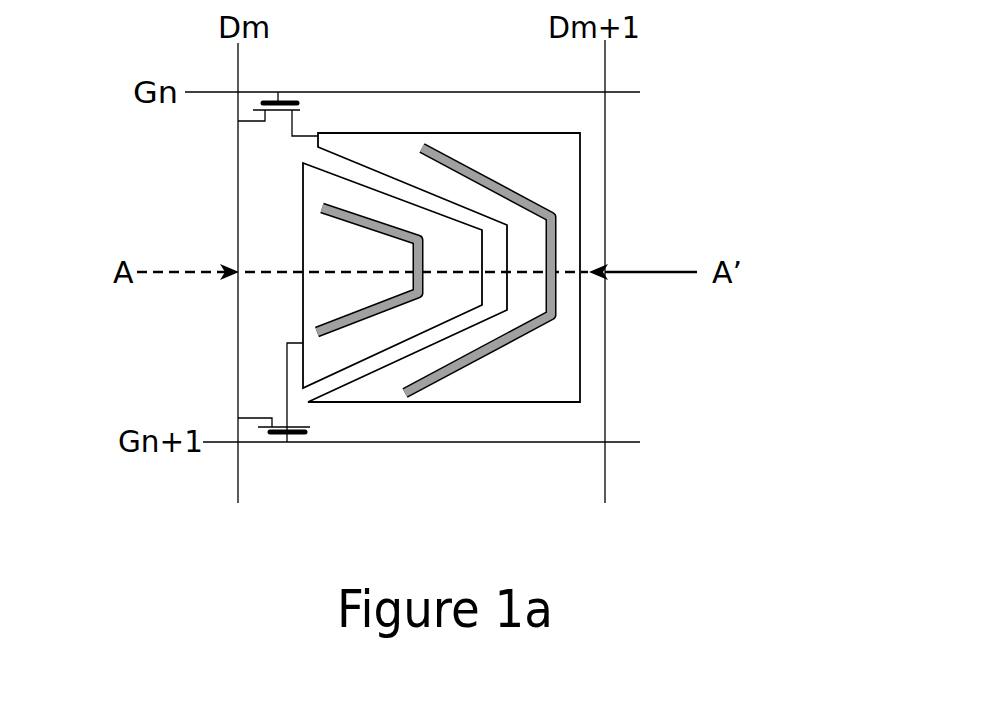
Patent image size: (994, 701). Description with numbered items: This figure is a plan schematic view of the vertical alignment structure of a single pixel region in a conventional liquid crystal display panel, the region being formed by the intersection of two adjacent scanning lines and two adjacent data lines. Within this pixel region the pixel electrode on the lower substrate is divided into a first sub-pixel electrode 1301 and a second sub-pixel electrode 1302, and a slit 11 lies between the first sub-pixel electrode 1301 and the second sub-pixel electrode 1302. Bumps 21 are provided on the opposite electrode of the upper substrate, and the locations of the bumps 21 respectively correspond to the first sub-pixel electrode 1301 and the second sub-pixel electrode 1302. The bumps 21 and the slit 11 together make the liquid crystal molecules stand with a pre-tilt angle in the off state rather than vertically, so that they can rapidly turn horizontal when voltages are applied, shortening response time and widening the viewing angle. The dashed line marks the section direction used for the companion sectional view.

The slit 11 is at (451, 339).
The bumps 21 is at (420, 300).
The first sub-pixel electrode 1301 is at (305, 193).
The second sub-pixel electrode 1302 is at (580, 158).